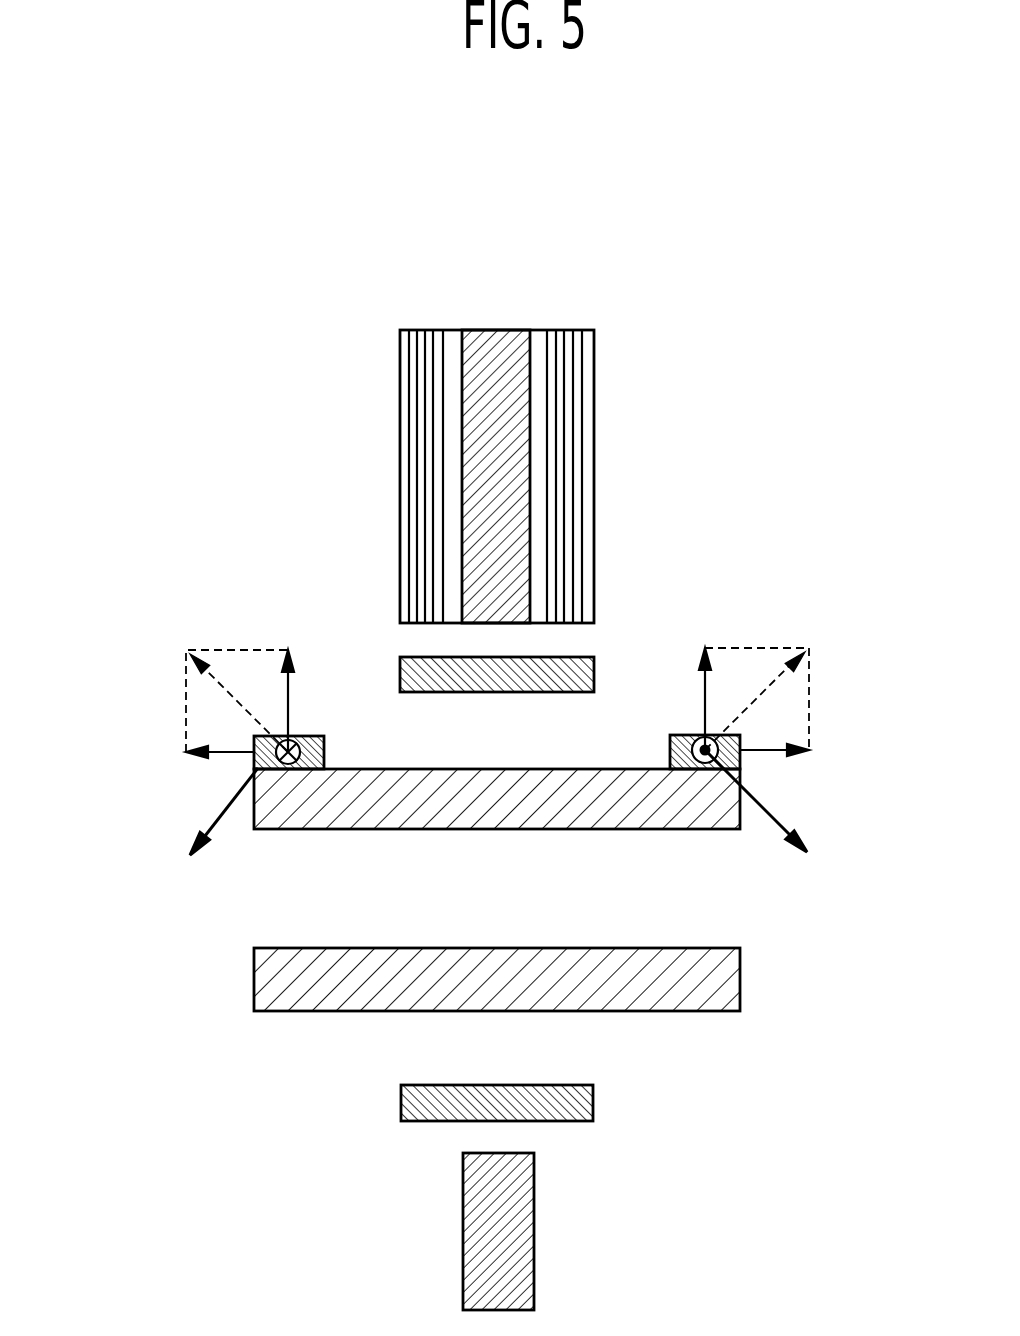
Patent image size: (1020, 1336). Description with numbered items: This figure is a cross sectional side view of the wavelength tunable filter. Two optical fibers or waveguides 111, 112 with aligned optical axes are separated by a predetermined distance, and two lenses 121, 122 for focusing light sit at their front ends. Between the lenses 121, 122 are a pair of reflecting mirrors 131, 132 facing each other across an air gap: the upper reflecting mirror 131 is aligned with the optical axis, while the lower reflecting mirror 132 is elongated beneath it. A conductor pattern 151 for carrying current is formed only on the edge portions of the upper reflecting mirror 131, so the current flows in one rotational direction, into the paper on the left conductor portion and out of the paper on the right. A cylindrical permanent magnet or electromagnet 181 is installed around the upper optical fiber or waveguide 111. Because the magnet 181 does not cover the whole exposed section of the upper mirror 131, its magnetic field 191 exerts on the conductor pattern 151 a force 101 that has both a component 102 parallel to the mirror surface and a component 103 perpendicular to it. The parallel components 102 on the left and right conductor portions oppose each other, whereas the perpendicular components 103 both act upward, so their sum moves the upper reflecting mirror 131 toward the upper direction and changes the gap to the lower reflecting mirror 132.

The electromagnetic force 101 is at (252, 735).
The parallel force component 102 is at (237, 756).
The perpendicular force component 103 is at (282, 741).
The upper optical fiber or waveguide 111 is at (497, 354).
The lower optical fiber or waveguide 112 is at (536, 1228).
The upper lens 121 is at (592, 659).
The lower lens 122 is at (598, 1097).
The upper reflecting mirror 131 is at (342, 822).
The lower reflecting mirror 132 is at (714, 960).
The conductor pattern 151 is at (313, 736).
The permanent magnet or electromagnet 181 is at (575, 452).
The magnetic field 191 is at (218, 818).